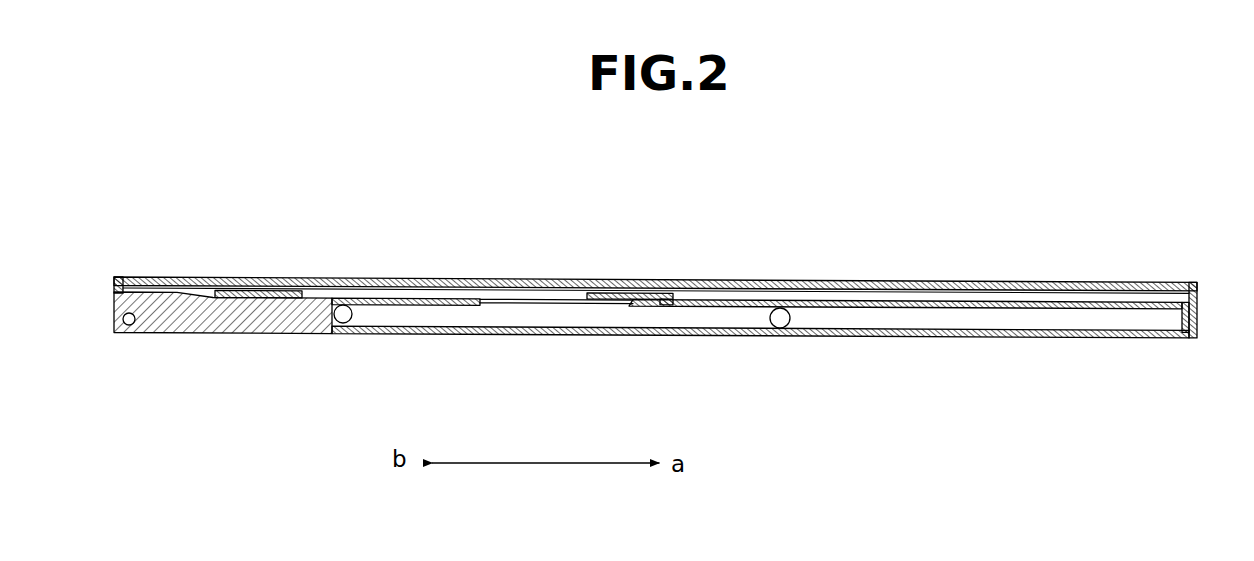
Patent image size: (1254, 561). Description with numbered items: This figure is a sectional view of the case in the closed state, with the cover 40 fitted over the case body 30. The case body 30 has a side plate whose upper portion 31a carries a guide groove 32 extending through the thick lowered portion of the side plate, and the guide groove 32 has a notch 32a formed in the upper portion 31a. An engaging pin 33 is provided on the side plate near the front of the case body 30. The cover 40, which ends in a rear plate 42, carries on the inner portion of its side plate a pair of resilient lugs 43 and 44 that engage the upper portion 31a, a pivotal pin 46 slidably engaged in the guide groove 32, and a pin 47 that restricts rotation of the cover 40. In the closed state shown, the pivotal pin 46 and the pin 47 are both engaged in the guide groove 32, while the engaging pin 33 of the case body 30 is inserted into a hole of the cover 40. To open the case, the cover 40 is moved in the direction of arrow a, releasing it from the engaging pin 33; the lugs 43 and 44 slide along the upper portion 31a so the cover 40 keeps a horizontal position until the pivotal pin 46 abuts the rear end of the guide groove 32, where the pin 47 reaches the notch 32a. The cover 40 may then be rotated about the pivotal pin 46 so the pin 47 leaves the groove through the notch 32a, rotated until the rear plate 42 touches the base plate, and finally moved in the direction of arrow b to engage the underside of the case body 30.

The case body 30 is at (196, 347).
The upper portion of the side plate 31a is at (399, 301).
The guide groove 32 is at (410, 310).
The notch 32a is at (515, 303).
The engaging pin 33 is at (130, 326).
The cover 40 is at (281, 258).
The rear plate 42 is at (1197, 312).
The resilient lug 43 is at (225, 291).
The resilient lug 44 is at (661, 297).
The pivotal pin 46 is at (780, 318).
The pin 47 is at (342, 314).